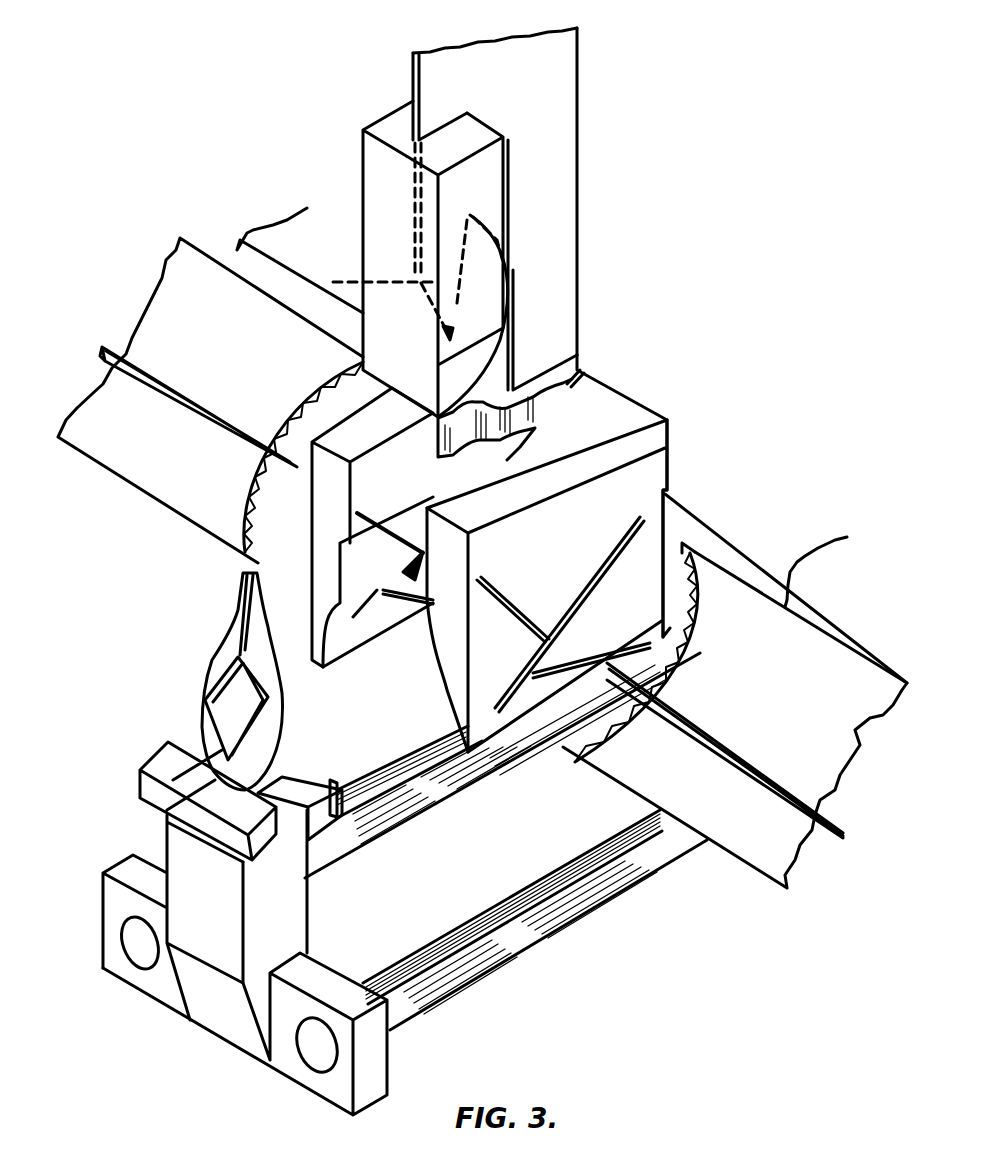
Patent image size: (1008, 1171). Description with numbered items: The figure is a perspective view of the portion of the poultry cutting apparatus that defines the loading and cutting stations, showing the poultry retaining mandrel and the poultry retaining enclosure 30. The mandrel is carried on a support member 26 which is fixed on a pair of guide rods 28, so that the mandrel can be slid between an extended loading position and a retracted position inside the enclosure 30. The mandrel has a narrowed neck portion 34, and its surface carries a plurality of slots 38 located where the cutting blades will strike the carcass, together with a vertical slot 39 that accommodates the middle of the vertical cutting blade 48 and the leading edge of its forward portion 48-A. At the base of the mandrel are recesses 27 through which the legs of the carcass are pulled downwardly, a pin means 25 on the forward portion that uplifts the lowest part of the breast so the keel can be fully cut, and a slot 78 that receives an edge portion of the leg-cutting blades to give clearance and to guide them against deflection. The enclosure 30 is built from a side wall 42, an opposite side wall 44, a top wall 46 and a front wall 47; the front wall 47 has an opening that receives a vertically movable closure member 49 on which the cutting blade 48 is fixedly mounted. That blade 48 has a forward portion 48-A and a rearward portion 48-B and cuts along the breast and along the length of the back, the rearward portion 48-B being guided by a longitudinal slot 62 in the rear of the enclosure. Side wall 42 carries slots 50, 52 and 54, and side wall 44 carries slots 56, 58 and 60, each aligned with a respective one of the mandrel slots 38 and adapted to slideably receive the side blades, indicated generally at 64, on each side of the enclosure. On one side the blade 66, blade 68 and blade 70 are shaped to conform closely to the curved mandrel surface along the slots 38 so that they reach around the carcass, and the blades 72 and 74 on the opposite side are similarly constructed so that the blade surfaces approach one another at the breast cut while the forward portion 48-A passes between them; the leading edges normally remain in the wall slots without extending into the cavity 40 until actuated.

The pin means 25 is at (165, 820).
The support member 26 is at (293, 890).
The recesses 27 is at (190, 744).
The guide rods 28 is at (413, 800).
The poultry retaining enclosure 30 is at (670, 445).
The neck portion 34 is at (224, 648).
The slots 38 is at (228, 675).
The vertical slot 39 is at (247, 610).
The cavity 40 is at (500, 463).
The side wall 42 is at (640, 483).
The side wall 44 is at (327, 523).
The top wall 46 is at (622, 410).
The front wall 47 is at (460, 673).
The cutting blade 48 is at (555, 75).
The forward portion 48-A is at (372, 282).
The rearward portion 48-B is at (568, 347).
The closure member 49 is at (367, 153).
The slot 50 is at (633, 537).
The slot 52 is at (540, 573).
The slot 54 is at (567, 667).
The slot 56 is at (343, 657).
The slot 58 is at (417, 600).
The slot 60 is at (383, 520).
The longitudinal slot 62 is at (582, 372).
The side blades 64 is at (215, 260).
The blade 66 is at (130, 462).
The blade 68 is at (190, 396).
The blade 70 is at (240, 517).
The blade 72 is at (578, 745).
The blade 74 is at (764, 718).
The slot 78 is at (283, 852).